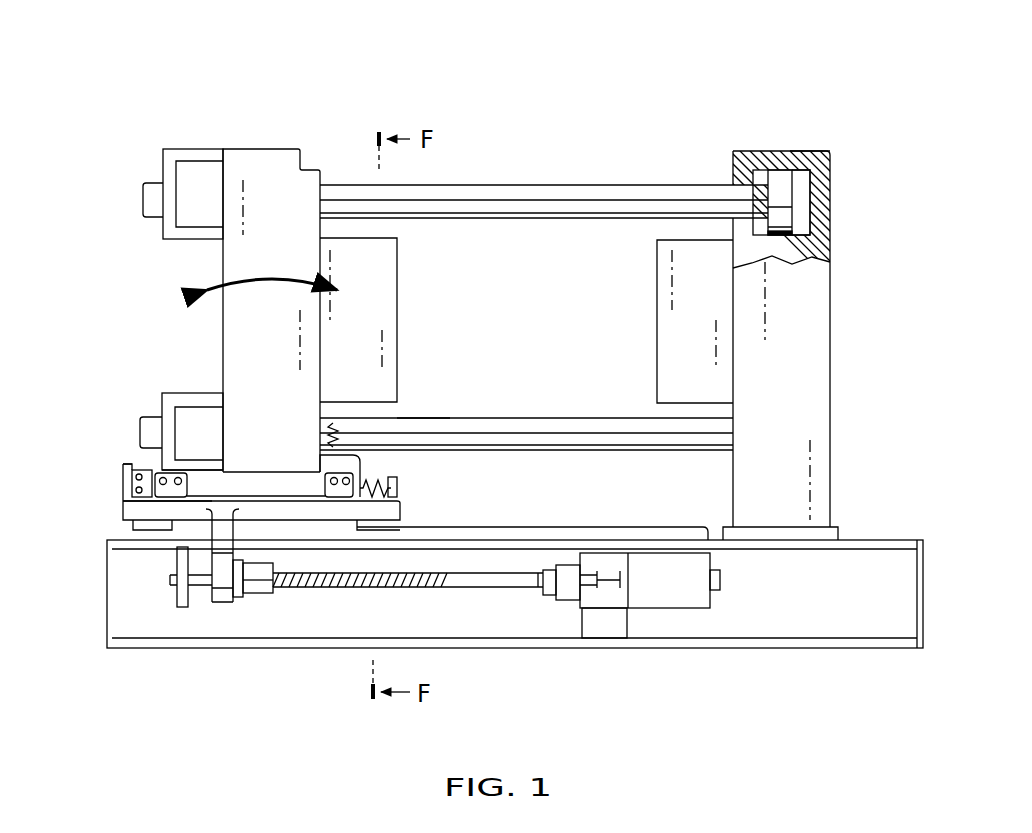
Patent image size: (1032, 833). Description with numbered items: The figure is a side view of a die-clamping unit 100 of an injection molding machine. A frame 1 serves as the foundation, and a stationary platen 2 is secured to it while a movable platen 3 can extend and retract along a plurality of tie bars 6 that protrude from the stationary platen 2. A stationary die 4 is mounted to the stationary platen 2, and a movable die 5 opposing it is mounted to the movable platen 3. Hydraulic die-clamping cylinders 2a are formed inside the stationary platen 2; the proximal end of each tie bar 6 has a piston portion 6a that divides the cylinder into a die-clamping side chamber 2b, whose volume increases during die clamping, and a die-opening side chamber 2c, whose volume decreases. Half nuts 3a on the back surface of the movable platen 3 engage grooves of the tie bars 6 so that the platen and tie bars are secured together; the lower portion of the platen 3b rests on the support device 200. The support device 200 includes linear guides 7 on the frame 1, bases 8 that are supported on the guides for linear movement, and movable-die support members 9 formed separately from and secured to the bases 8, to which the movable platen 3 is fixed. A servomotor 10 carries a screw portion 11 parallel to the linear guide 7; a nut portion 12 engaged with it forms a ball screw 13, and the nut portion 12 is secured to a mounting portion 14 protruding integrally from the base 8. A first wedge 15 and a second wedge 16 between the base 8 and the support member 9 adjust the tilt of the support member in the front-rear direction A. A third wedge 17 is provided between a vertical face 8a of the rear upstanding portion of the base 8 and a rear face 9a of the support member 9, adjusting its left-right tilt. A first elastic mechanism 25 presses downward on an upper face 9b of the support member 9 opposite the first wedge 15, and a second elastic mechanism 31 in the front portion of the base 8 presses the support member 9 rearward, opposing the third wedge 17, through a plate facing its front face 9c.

The die-clamping unit 100 is at (515, 76).
The support device 200 is at (101, 513).
The frame 1 is at (880, 540).
The stationary platen 2 is at (834, 253).
The hydraulic die-clamping cylinder 2a is at (800, 168).
The die-clamping side chamber 2b is at (762, 178).
The die-opening side chamber 2c is at (808, 185).
The movable platen 3 is at (219, 332).
The half nut 3a is at (172, 157).
The movable column lower portion 3b is at (282, 445).
The stationary die 4 is at (657, 278).
The movable die 5 is at (395, 298).
The tie bar 6 is at (586, 188).
The piston portion 6a is at (784, 215).
The linear guide 7 is at (619, 527).
The base 8 is at (302, 512).
The vertical face 8a is at (149, 471).
The movable-die support member 9 is at (250, 476).
The rear face 9a is at (139, 467).
The upper face 9b is at (366, 469).
The front face 9c is at (376, 477).
The servomotor 10 is at (690, 608).
The screw portion 11 is at (493, 588).
The nut portion 12 is at (258, 595).
The ball screw 13 is at (229, 613).
The mounting portion 14 is at (220, 603).
The first wedge 15 is at (342, 497).
The second wedge 16 is at (170, 497).
The third wedge 17 is at (124, 473).
The first elastic mechanism 25 is at (339, 419).
The second elastic mechanism 31 is at (422, 445).
The front-rear direction A is at (277, 284).